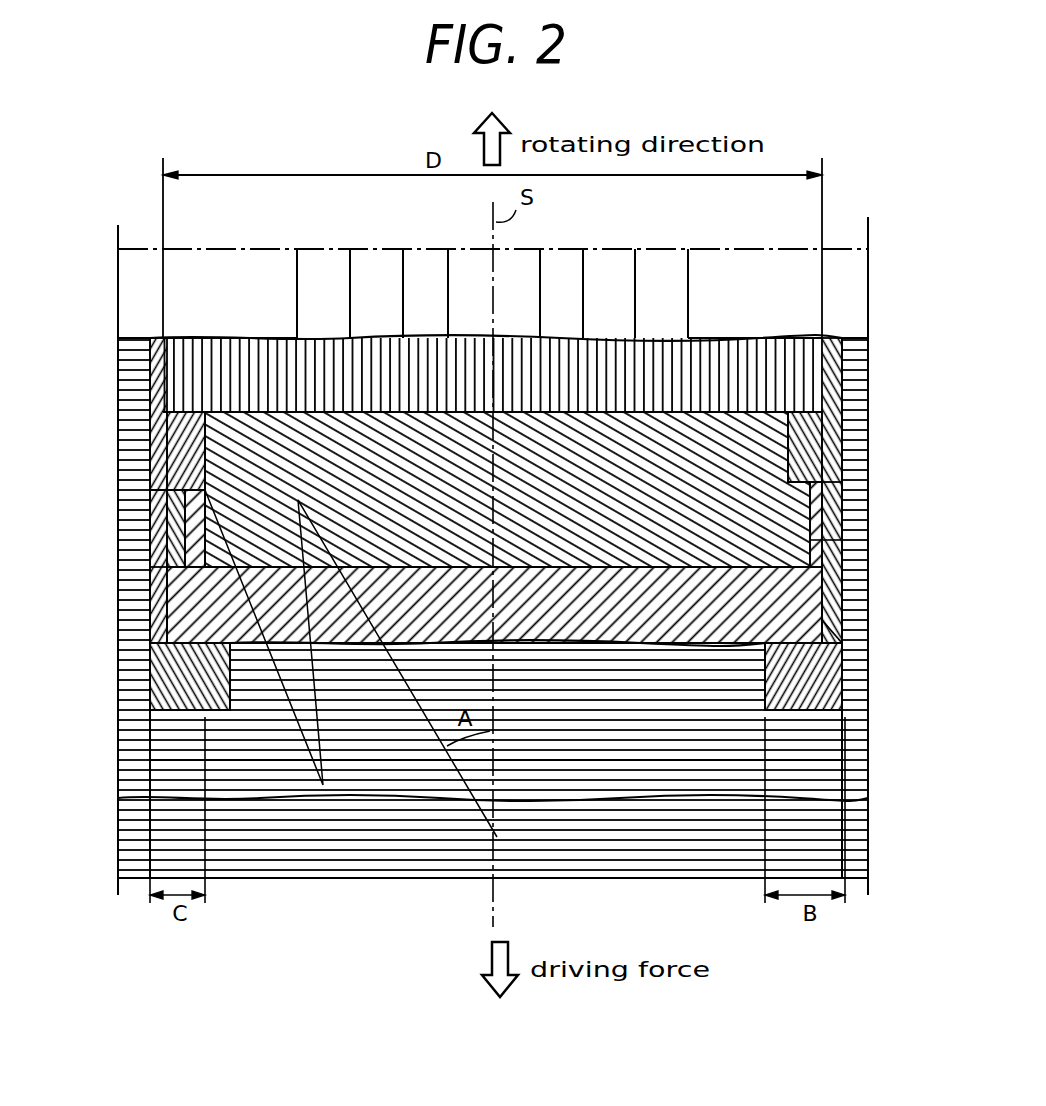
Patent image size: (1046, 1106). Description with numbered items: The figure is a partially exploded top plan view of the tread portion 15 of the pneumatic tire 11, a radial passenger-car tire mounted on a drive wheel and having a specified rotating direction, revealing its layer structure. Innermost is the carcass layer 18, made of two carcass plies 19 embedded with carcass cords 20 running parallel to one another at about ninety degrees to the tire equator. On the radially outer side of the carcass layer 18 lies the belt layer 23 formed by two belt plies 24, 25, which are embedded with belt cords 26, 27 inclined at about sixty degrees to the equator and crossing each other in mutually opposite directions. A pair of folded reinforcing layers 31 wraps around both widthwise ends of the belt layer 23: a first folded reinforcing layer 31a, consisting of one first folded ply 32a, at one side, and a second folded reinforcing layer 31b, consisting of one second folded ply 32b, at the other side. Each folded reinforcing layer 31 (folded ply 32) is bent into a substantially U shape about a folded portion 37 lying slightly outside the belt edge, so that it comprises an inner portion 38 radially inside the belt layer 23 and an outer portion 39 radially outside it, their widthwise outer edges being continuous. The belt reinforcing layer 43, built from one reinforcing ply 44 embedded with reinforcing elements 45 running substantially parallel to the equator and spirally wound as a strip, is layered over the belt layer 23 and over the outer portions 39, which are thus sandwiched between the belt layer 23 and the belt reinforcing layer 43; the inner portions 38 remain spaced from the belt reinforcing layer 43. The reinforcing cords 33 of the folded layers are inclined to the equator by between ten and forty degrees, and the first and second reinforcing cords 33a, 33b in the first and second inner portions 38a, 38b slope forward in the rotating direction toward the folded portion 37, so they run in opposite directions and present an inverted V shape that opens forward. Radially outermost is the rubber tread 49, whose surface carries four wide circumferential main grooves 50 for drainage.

The pneumatic tire 11 is at (340, 240).
The tread portion 15 is at (375, 245).
The carcass layer 18 is at (130, 798).
The carcass ply 19 is at (130, 840).
The carcass cords 20 is at (858, 797).
The belt layer 23 is at (828, 520).
The belt ply 24 is at (840, 603).
The belt ply 25 is at (845, 542).
The belt cords 26 is at (835, 572).
The belt cords 27 is at (832, 490).
The folded reinforcing layers 31 is at (150, 338).
The first folded reinforcing layer 31a is at (147, 430).
The second folded reinforcing layer 31b is at (842, 338).
The folded ply 32 is at (165, 694).
The first folded ply 32a is at (170, 455).
The second folded ply 32b is at (840, 706).
The reinforcing cords 33 is at (165, 662).
The first reinforcing cords 33a is at (175, 553).
The second reinforcing cords 33b is at (845, 440).
The folded portion 37 is at (155, 380).
The inner portion 38 is at (152, 708).
The first inner portion 38a is at (170, 604).
The second inner portion 38b is at (840, 683).
The outer portion 39 is at (163, 490).
The belt reinforcing layer 43 is at (738, 330).
The reinforcing ply 44 is at (208, 352).
The reinforcing elements 45 is at (270, 352).
The tread 49 is at (612, 265).
The main grooves 50 is at (405, 265).